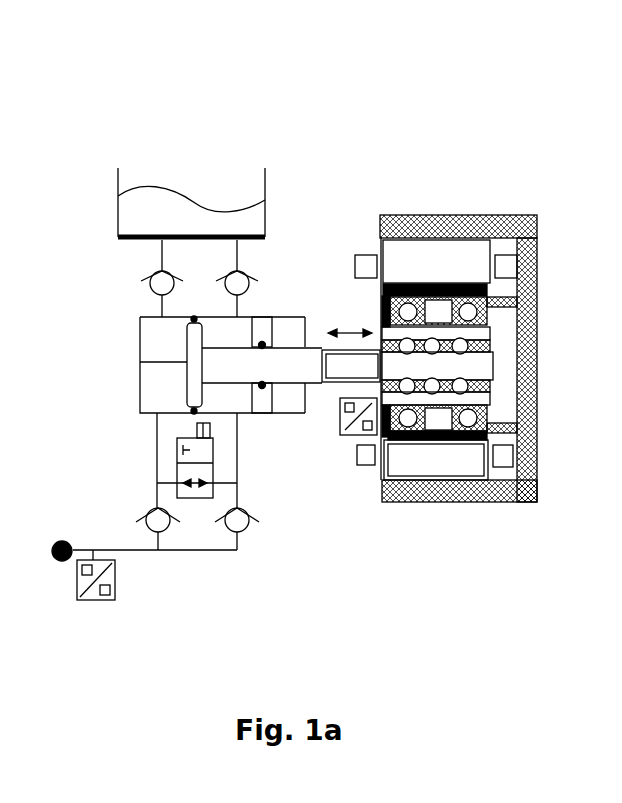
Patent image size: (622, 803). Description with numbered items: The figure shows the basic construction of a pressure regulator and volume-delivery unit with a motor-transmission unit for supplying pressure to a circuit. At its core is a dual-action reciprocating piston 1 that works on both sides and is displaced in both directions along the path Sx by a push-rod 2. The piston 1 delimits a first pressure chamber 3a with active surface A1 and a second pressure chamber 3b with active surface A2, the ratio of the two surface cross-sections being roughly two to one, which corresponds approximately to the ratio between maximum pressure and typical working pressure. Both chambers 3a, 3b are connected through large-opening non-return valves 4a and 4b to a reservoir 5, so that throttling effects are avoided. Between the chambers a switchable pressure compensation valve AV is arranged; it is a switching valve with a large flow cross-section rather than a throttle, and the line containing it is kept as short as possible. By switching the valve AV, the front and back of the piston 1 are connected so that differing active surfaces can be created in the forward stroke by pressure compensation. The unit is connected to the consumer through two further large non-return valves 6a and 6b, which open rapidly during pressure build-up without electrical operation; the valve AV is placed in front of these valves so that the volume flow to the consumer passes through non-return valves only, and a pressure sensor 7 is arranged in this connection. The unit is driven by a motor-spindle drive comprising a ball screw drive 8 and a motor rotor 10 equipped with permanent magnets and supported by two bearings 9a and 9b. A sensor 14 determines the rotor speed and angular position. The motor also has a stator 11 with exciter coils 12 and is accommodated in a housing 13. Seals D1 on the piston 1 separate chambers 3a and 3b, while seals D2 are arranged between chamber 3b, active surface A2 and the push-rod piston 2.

The piston 1 is at (187, 392).
The push-rod 2 is at (290, 363).
The first pressure chamber 3a is at (157, 340).
The second pressure chamber 3b is at (222, 333).
The non-return valve 4a is at (149, 279).
The non-return valve 4b is at (244, 276).
The reservoir 5 is at (190, 218).
The non-return valve 6a is at (163, 527).
The non-return valve 6b is at (237, 527).
The pressure sensor 7 is at (115, 600).
The ball screw drive 8 is at (473, 373).
The bearing 9a is at (415, 300).
The bearing 9b is at (474, 300).
The motor rotor 10 is at (483, 287).
The stator 11 is at (448, 460).
The exciter coils 12 is at (527, 498).
The housing 13 is at (418, 487).
The sensor 14 is at (355, 437).
The active surface A1 is at (185, 365).
The active surface A2 is at (203, 390).
The seals D1 is at (193, 410).
The seals D2 is at (270, 385).
The pressure compensation valve AV is at (213, 465).
The path Sx is at (350, 318).